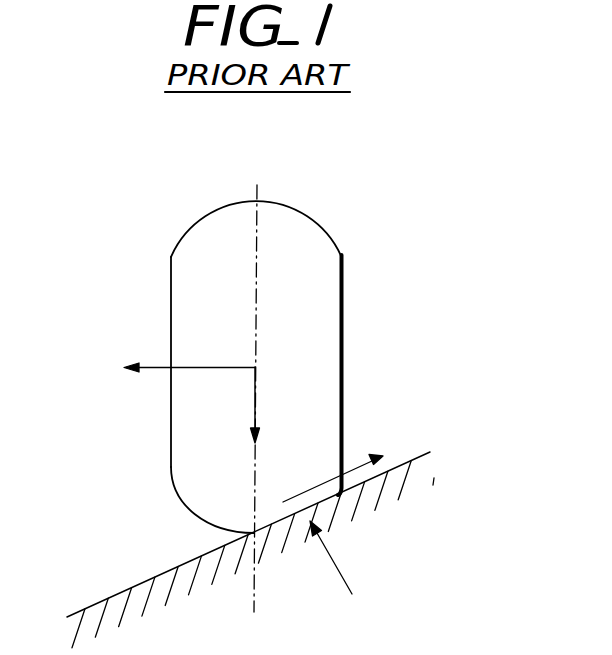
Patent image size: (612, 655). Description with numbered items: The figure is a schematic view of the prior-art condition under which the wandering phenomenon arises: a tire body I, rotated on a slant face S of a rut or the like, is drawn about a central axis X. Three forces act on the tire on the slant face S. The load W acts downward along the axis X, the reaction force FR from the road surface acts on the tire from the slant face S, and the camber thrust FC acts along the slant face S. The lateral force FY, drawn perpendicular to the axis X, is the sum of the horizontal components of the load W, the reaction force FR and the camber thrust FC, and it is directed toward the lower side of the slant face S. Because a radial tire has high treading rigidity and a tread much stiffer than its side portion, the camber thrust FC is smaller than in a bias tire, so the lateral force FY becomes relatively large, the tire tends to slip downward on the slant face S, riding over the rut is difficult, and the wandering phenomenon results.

The inertial body / mass I is at (343, 254).
The slant face S is at (124, 588).
The body axis X- X is at (253, 397).
The load W is at (242, 405).
The lateral force FY is at (170, 366).
The camber thrust FC is at (350, 467).
The reaction force FR is at (346, 557).